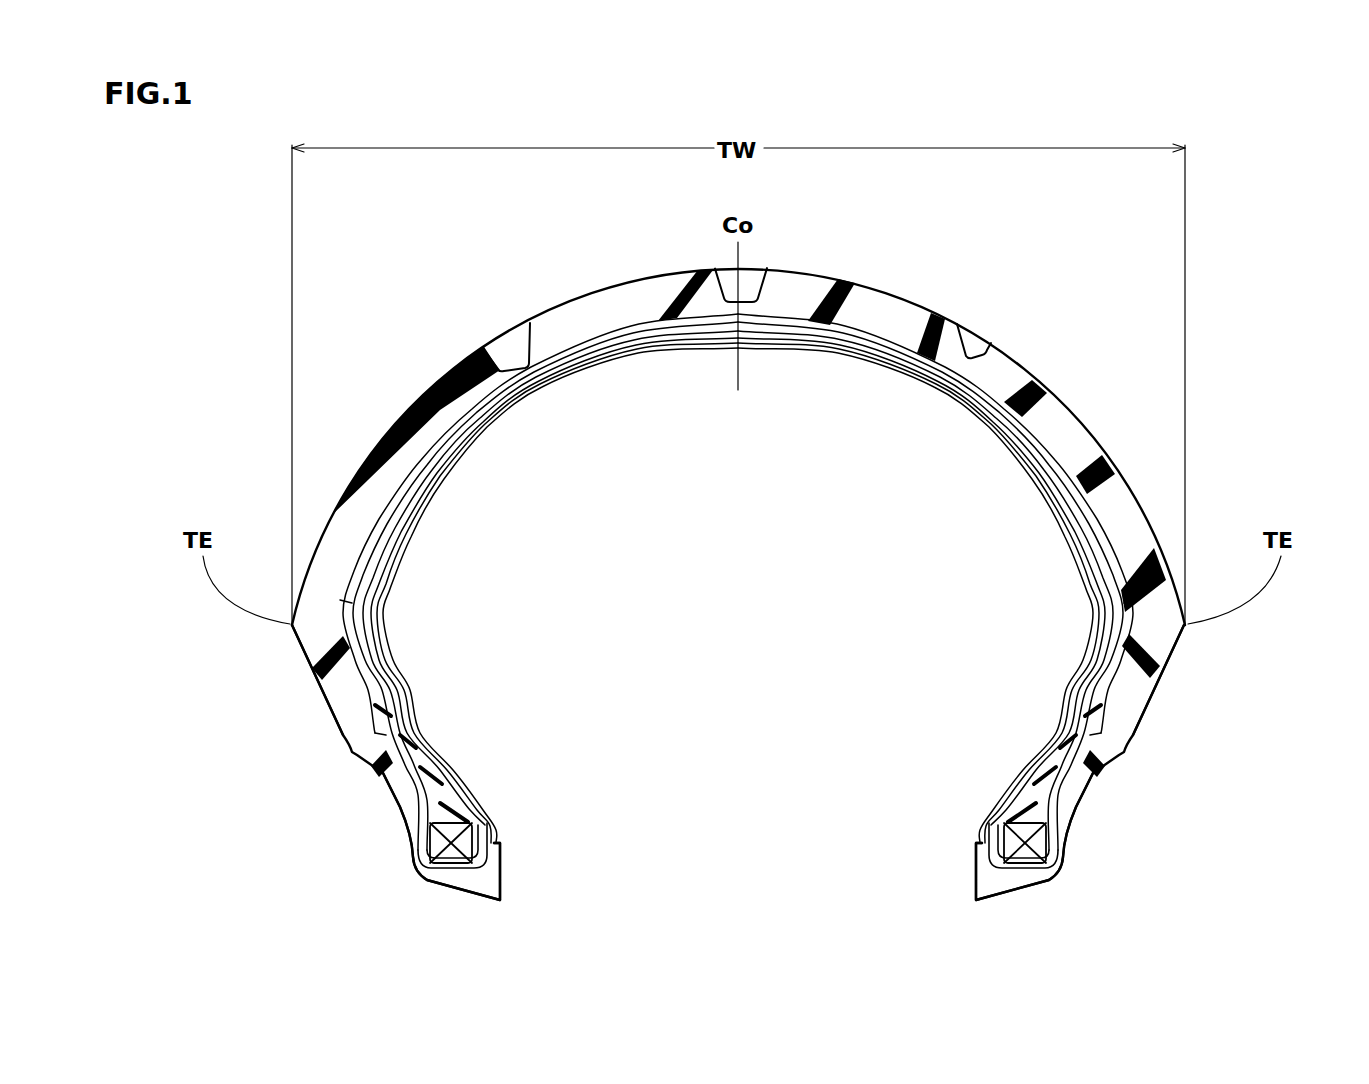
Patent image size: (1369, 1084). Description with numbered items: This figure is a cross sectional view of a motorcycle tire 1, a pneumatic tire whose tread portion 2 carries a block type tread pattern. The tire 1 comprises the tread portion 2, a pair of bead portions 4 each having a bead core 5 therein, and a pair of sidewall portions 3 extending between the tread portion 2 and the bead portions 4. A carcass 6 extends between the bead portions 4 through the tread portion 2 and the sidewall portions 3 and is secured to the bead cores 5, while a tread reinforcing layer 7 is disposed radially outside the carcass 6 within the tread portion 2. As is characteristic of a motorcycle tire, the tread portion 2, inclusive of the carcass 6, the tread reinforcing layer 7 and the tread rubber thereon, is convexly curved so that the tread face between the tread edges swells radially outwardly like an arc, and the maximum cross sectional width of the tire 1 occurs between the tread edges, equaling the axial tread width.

The motorcycle tire 1 is at (944, 310).
The tread portion 2 is at (790, 283).
The sidewall portion 3 is at (337, 708).
The bead portion 4 is at (503, 880).
The bead core 5 is at (455, 845).
The carcass 6 is at (470, 445).
The tread reinforcing layer 7 is at (662, 338).